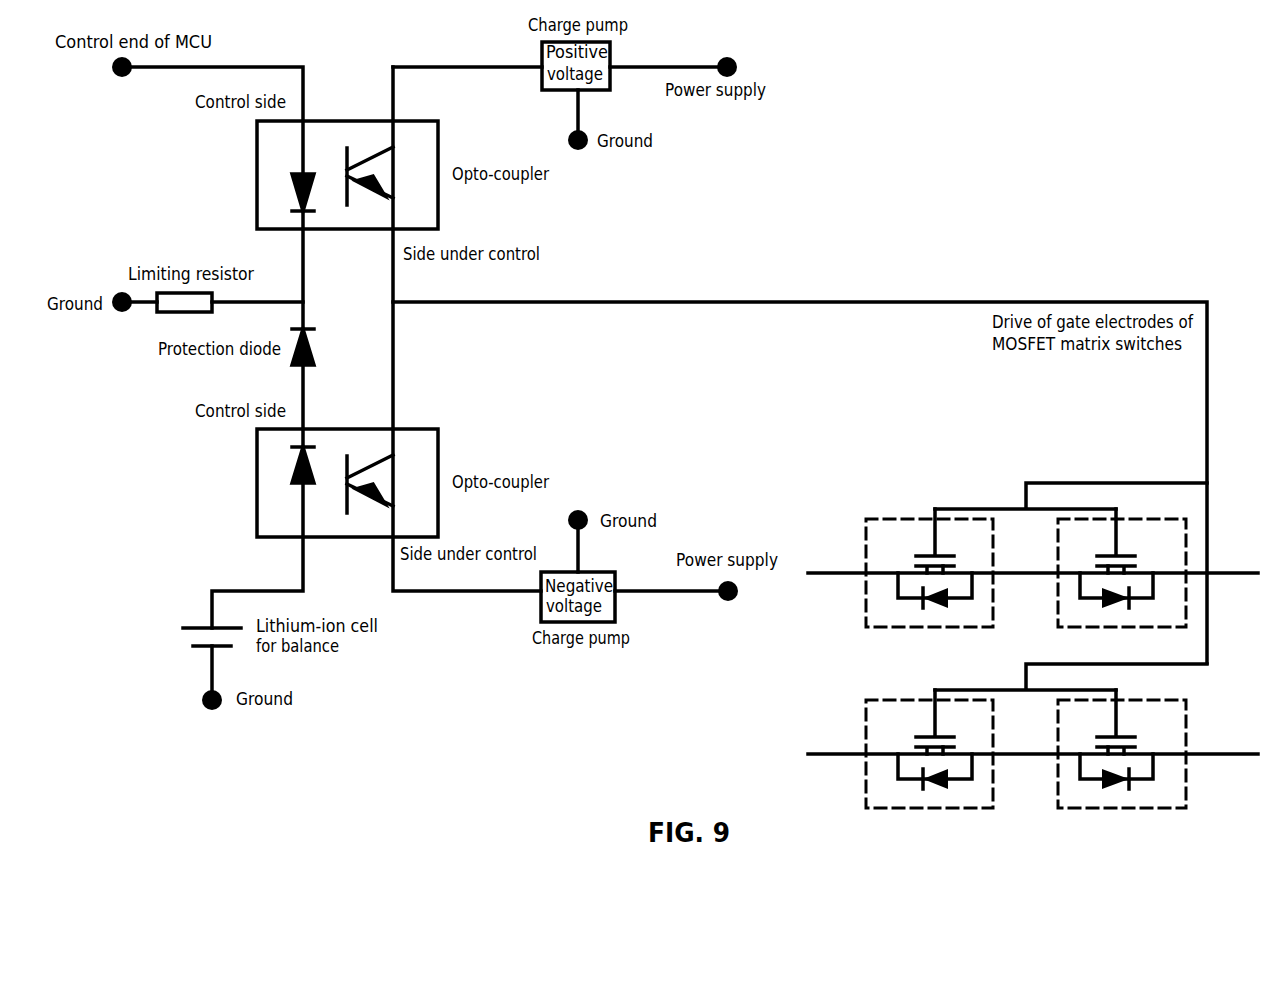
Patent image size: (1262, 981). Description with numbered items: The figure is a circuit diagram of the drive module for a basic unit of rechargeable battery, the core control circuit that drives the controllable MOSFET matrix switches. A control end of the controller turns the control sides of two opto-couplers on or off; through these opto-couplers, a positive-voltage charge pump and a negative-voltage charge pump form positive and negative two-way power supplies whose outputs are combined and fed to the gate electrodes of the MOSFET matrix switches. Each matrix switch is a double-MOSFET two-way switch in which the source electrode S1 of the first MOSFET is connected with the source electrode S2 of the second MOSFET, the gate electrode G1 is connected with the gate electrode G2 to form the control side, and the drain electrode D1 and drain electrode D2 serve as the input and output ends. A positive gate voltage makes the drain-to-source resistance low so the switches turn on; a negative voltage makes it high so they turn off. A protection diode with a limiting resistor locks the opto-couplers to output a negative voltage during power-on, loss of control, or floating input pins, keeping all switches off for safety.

The gate electrode of the first MOSFET G1 is at (929, 623).
The drain electrode of the first MOSFET D1 is at (925, 669).
The source electrode of the first MOSFET S1 is at (963, 652).
The gate electrode of the second MOSFET G2 is at (1112, 623).
The source electrode of the second MOSFET S2 is at (1088, 652).
The drain electrode of the second MOSFET D2 is at (1125, 669).